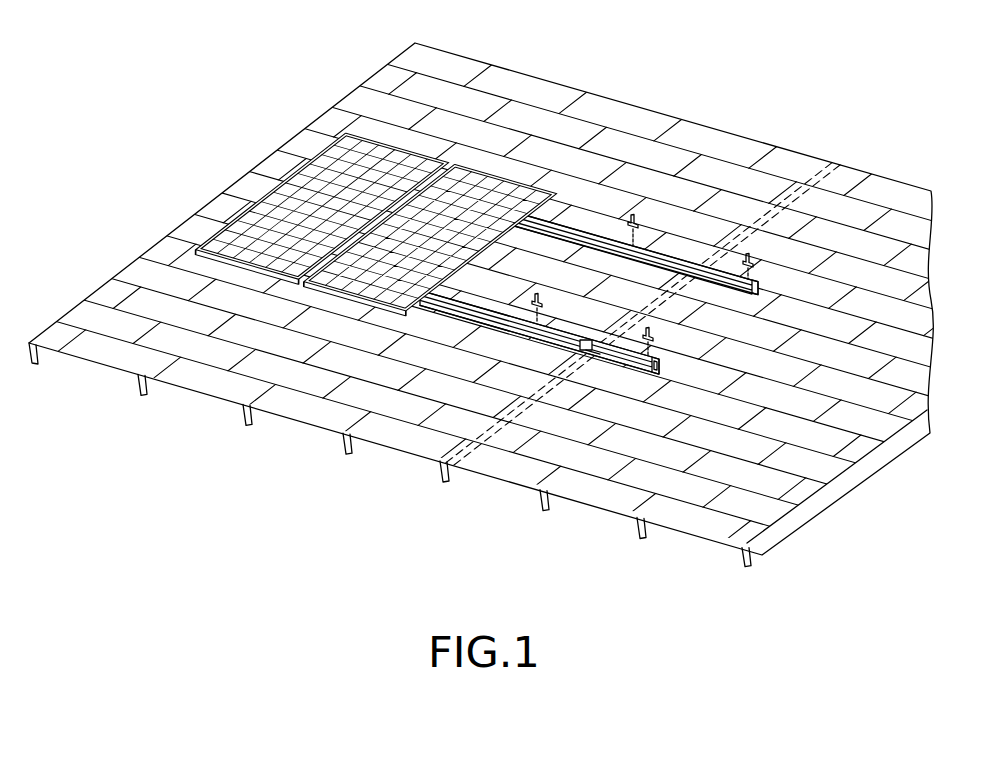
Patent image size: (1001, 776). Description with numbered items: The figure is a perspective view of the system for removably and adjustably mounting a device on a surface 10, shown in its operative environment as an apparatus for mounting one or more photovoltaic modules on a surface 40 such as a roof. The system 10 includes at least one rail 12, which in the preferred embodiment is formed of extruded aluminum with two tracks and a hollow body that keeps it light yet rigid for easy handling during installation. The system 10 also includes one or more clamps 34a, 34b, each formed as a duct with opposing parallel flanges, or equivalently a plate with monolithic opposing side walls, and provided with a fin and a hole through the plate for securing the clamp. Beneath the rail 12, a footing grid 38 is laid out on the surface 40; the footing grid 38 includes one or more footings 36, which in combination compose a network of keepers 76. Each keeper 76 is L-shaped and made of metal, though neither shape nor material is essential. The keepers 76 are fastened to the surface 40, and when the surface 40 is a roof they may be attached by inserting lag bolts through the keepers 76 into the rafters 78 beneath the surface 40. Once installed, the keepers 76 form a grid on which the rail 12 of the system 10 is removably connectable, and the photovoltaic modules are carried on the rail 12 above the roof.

The system for removably and adjustably mounting a device on a surface 10 is at (506, 203).
The rail 12 is at (539, 331).
The clamp 34a is at (540, 300).
The clamp 34b is at (657, 333).
The footing 36 is at (587, 347).
The footing grid 38 is at (700, 307).
The surface 40 is at (515, 293).
The keeper 76 is at (590, 363).
The rafter 78 is at (457, 473).